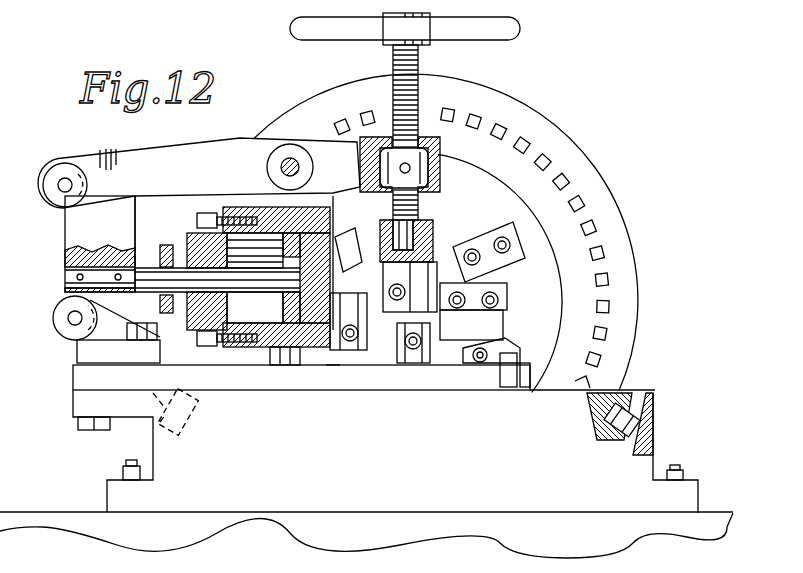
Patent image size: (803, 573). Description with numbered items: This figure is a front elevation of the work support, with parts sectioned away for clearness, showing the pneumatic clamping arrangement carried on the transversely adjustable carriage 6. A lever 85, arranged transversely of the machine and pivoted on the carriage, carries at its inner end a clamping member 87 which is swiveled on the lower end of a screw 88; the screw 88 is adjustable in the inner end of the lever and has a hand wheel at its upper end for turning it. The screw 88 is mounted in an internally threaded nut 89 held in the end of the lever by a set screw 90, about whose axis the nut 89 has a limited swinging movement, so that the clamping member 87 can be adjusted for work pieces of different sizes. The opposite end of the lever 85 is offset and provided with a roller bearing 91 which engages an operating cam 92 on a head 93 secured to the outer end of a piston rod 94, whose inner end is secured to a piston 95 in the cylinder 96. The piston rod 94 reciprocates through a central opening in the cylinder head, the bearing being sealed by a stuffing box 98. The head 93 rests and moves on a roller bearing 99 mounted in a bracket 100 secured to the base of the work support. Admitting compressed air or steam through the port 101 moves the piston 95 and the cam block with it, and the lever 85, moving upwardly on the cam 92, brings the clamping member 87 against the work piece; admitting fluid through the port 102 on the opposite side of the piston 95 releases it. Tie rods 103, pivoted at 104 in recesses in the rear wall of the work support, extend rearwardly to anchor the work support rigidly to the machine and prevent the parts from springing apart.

The transversely adjustable carriage 6 is at (682, 532).
The lever 85 is at (188, 153).
The clamping member 87 is at (430, 243).
The screw 88 is at (410, 88).
The nut 89 is at (438, 150).
The set screw 90 is at (410, 168).
The roller bearing 91 is at (50, 177).
The operating cam 92 is at (92, 200).
The head 93 is at (70, 243).
The piston rod 94 is at (150, 268).
The piston 95 is at (287, 300).
The cylinder 96 is at (263, 335).
The stuffing box 98 is at (183, 258).
The roller bearing 99 is at (55, 317).
The bracket 100 is at (72, 330).
The port 101 is at (330, 373).
The port 102 is at (385, 439).
The tie rods 103 is at (637, 403).
The pivot 104 is at (657, 415).